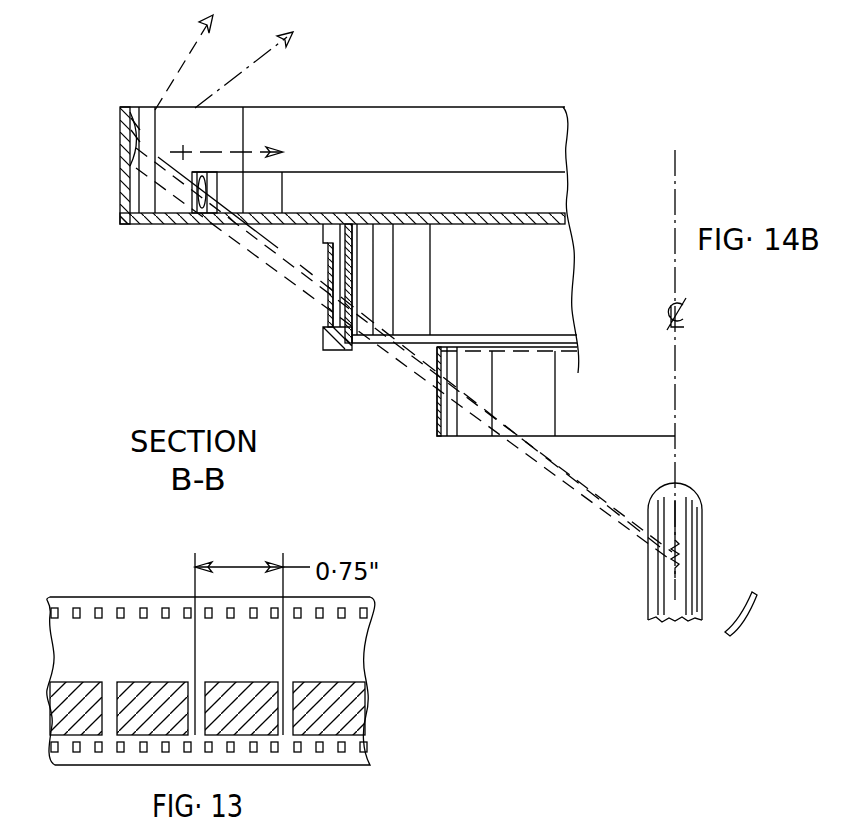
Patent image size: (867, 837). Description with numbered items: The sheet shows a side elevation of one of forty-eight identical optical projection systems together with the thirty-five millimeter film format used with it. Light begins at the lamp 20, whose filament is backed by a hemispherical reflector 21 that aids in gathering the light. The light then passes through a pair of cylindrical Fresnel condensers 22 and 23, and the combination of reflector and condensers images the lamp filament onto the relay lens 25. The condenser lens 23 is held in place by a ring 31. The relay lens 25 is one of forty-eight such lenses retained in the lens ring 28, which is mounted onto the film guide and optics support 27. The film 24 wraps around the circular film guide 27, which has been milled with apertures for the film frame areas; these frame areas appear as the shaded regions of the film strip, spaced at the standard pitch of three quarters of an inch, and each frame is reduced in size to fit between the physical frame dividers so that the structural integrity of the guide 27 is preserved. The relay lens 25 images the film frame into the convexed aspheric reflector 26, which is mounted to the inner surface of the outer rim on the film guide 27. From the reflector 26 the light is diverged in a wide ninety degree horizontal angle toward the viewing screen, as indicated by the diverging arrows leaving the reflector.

In FIG. 14B, the lamp 20 is at (703, 524).
In FIG. 14B, the hemispherical reflector 21 is at (750, 592).
In FIG. 14B, the cylindrical Fresnel condenser 22 is at (440, 405).
In FIG. 14B, the cylindrical Fresnel condenser 23 is at (352, 282).
In FIG. 14B, the film 24 is at (330, 300).
In FIG. 13, the film 24 is at (366, 658).
In FIG. 14B, the relay lens 25 is at (217, 190).
In FIG. 14B, the convexed aspheric reflector 26 is at (141, 142).
In FIG. 14B, the film guide and optics support 27 is at (180, 226).
In FIG. 14B, the lens ring 28 is at (385, 172).
In FIG. 14B, the ring 31 is at (340, 352).